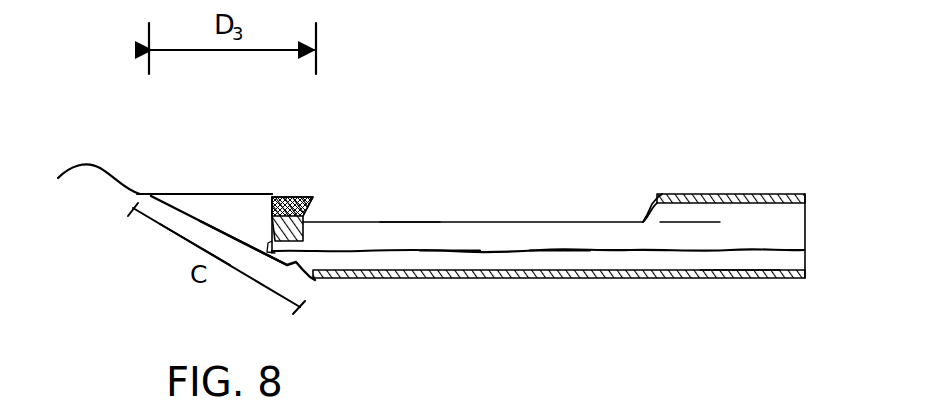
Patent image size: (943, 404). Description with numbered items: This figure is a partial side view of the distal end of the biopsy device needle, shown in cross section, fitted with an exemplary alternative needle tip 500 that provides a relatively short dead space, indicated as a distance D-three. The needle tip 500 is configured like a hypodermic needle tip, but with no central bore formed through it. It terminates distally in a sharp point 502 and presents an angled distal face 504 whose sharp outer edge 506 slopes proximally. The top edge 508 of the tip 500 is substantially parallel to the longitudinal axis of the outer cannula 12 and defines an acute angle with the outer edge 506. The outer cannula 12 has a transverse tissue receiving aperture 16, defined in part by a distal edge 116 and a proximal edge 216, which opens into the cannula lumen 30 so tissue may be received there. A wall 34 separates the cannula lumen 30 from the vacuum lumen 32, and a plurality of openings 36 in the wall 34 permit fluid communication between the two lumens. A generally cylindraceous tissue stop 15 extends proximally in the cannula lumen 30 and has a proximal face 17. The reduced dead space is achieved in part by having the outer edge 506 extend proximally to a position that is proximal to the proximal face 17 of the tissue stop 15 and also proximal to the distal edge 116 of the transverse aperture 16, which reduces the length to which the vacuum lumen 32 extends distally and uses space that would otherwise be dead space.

The outer cannula 12 is at (738, 194).
The tissue stop 15 is at (290, 221).
The transverse tissue receiving aperture 16 is at (441, 169).
The proximal face 17 is at (300, 230).
The cannula lumen 30 is at (695, 226).
The vacuum lumen 32 is at (729, 260).
The wall 34 is at (555, 250).
The openings 36 is at (450, 250).
The distal edge 116 is at (305, 200).
The proximal edge 216 is at (650, 194).
The needle tip 500 is at (218, 204).
The sharp point 502 is at (77, 190).
The angled distal face 504 is at (246, 244).
The outer edge 506 is at (195, 222).
The top edge 508 is at (237, 199).